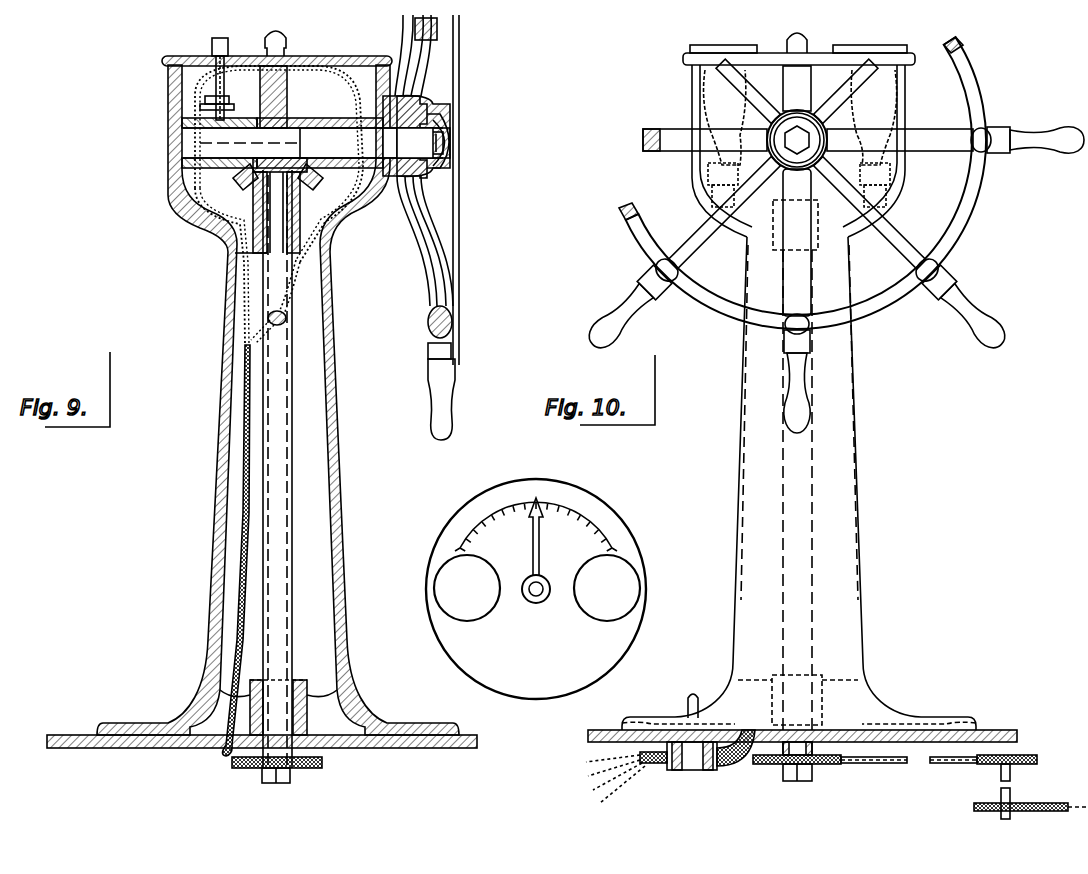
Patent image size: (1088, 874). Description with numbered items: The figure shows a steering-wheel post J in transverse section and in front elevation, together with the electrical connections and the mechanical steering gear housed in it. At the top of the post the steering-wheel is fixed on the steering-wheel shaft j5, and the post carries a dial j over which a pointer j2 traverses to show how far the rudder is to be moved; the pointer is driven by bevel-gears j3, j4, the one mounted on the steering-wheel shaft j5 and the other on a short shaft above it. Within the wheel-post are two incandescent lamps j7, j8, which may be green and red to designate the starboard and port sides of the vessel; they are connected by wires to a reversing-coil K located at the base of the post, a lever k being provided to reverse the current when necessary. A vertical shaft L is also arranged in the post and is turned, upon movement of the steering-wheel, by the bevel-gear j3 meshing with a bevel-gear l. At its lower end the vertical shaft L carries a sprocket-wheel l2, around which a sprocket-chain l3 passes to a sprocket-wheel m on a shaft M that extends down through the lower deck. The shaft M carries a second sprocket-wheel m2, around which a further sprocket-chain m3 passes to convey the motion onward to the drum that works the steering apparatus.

In FIG. 9, the dial j is at (190, 57).
In FIG. 9, the pointer j2 is at (332, 58).
In FIG. 9, the bevel-gear j3 is at (307, 125).
In FIG. 9, the bevel-gear j4 is at (295, 125).
In FIG. 9, the steering-wheel shaft j5 is at (255, 128).
In FIG. 10, the incandescent lamp j7 is at (700, 93).
In FIG. 10, the incandescent lamp j8 is at (903, 91).
In FIG. 9, the bevel-gear l is at (240, 185).
In FIG. 9, the vertical shaft L is at (278, 457).
In FIG. 10, the vertical shaft L is at (793, 473).
In FIG. 9, the sprocket-wheel l2 is at (317, 770).
In FIG. 10, the sprocket-wheel l2 is at (772, 766).
In FIG. 10, the sprocket-chain l3 is at (868, 765).
In FIG. 10, the steering-wheel post J is at (853, 458).
In FIG. 10, the lever k is at (687, 699).
In FIG. 10, the reversing-coil K is at (694, 771).
In FIG. 10, the sprocket-wheel m is at (976, 765).
In FIG. 10, the shaft M is at (1010, 775).
In FIG. 10, the second sprocket-wheel m2 is at (974, 808).
In FIG. 10, the sprocket-chain m3 is at (1068, 806).